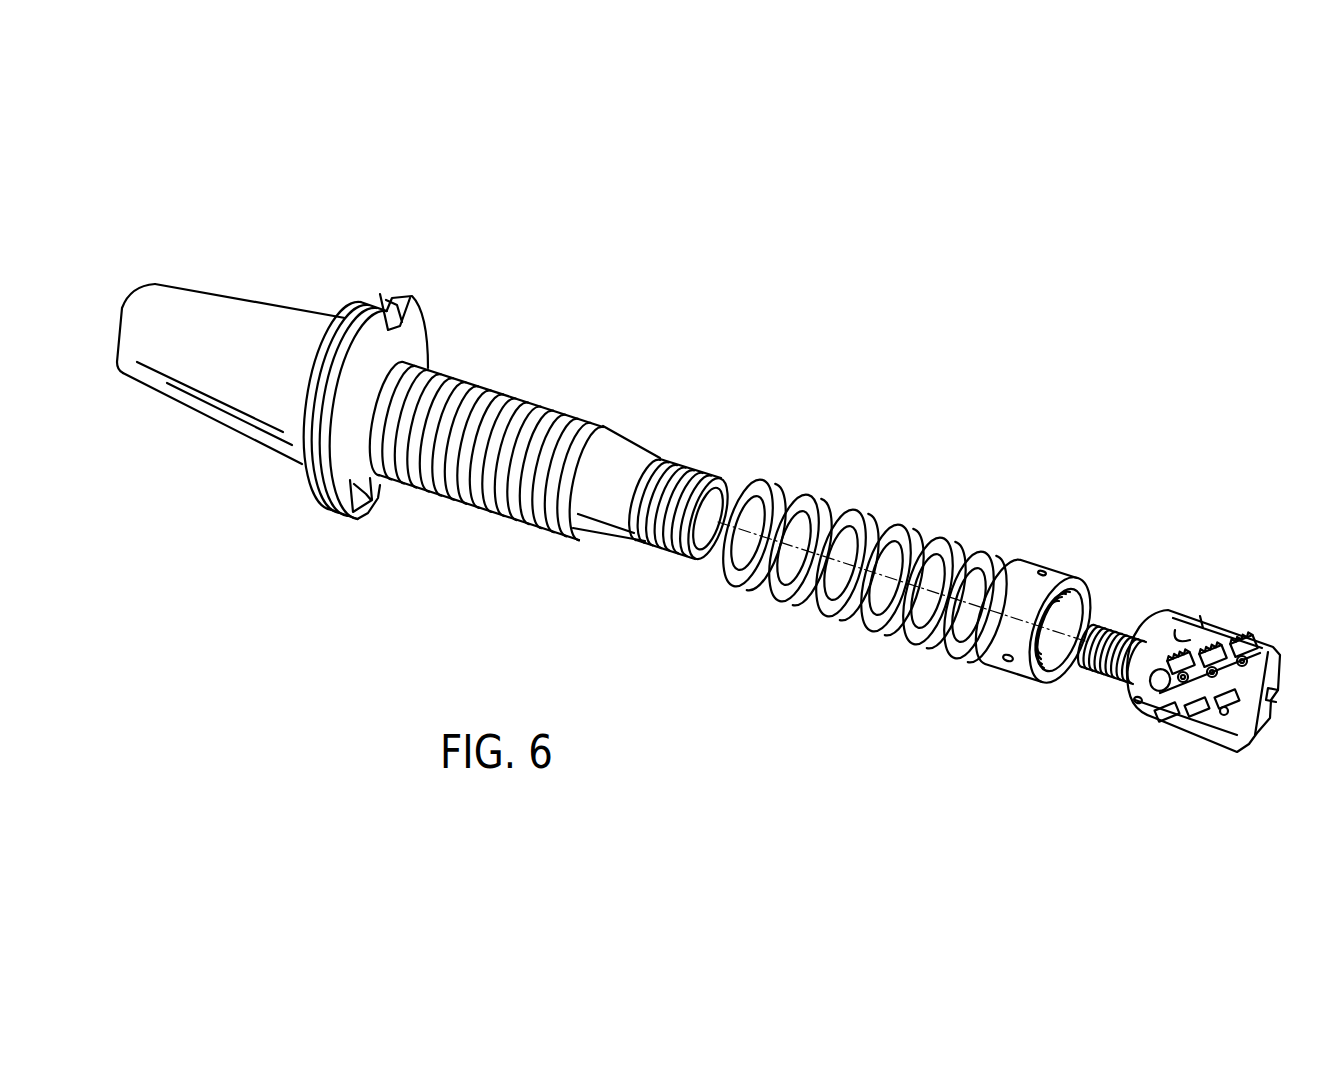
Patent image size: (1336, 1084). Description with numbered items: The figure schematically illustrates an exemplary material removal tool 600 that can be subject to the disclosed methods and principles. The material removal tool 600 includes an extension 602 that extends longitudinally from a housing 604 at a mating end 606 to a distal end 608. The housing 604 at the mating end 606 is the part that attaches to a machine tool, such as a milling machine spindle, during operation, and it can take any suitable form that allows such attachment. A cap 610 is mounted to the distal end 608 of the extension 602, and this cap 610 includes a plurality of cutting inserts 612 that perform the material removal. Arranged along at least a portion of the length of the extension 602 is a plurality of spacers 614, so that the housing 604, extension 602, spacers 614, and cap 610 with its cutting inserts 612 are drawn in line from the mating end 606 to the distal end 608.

The material removal tool 600 is at (778, 376).
The extension 602 is at (627, 462).
The housing 604 is at (243, 330).
The mating end 606 is at (112, 314).
The distal end 608 is at (707, 570).
The cap 610 is at (1284, 722).
The cutting inserts 612 is at (1185, 660).
The spacers 614 is at (475, 420).